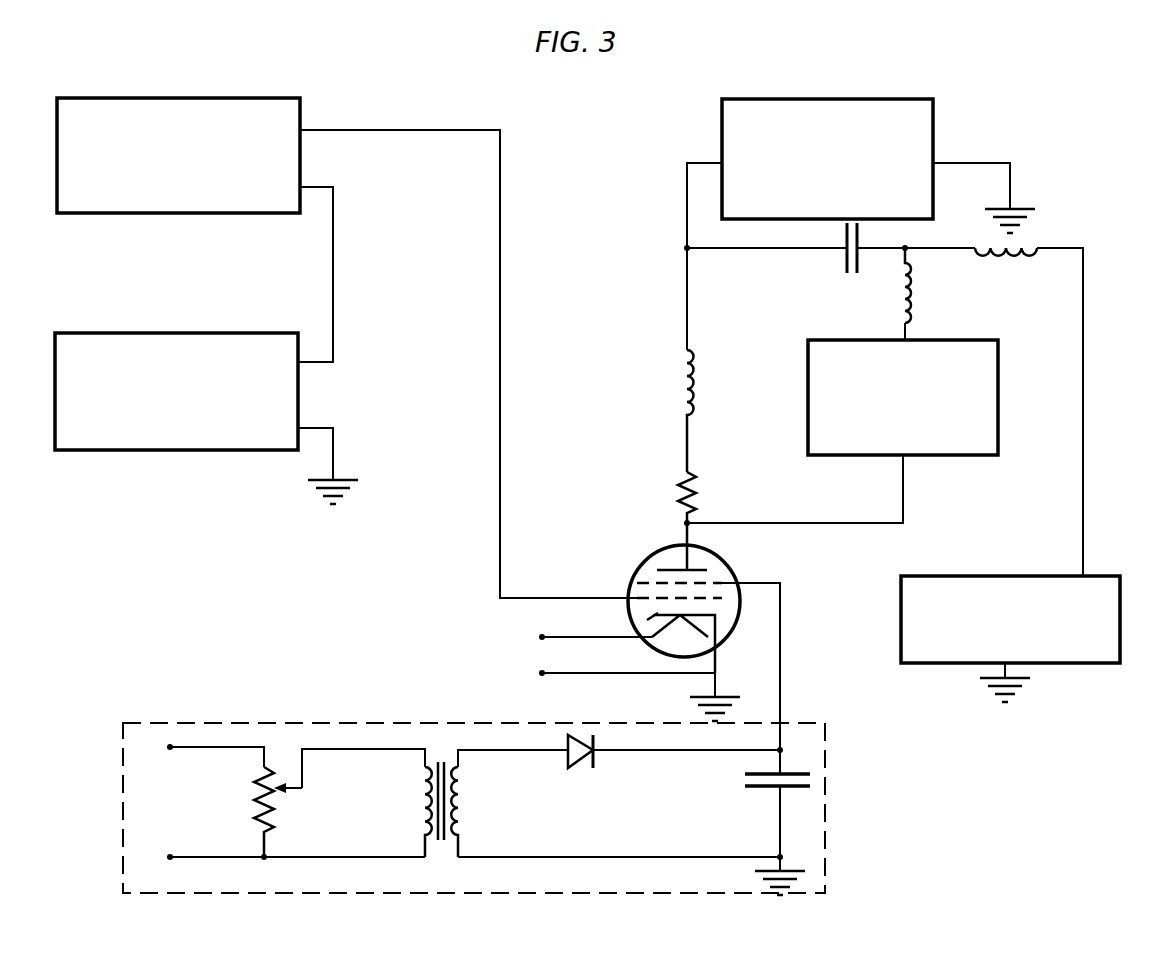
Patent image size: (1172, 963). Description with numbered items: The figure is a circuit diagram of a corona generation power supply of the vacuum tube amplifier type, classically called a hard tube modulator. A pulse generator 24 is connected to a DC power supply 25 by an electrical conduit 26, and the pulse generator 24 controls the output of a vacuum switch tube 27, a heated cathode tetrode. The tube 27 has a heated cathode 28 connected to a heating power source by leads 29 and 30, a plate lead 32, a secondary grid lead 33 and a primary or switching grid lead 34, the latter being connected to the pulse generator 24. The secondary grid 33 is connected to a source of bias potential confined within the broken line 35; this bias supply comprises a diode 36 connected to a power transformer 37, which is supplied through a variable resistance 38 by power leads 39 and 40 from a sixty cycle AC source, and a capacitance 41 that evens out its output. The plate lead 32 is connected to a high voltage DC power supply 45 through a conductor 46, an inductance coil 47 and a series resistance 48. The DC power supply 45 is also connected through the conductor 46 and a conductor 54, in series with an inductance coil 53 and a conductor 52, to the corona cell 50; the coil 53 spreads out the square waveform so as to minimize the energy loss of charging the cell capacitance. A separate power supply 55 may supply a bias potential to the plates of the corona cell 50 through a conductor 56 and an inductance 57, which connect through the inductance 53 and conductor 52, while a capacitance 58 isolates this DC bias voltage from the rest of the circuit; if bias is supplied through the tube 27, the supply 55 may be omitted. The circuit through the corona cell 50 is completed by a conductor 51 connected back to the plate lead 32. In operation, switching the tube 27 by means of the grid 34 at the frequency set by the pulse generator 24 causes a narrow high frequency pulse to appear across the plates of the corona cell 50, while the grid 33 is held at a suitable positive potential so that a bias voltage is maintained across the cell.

The pulse generator 24 is at (178, 97).
The DC power supply 25 is at (150, 450).
The electrical conduit 26 is at (333, 248).
The vacuum switch tube 27 is at (730, 569).
The heated cathode 28 is at (718, 660).
The lead 29 is at (598, 673).
The lead 30 is at (600, 637).
The plate lead 32 is at (683, 537).
The secondary grid lead 33 is at (780, 628).
The primary grid lead 34 is at (565, 598).
The bias potential supply 35 is at (825, 745).
The diode 36 is at (575, 770).
The power transformer 37 is at (464, 831).
The variable resistance 38 is at (270, 826).
The power lead 39 is at (190, 747).
The power lead 40 is at (200, 857).
The capacitance 41 is at (752, 786).
The DC power supply 45 is at (857, 99).
The conductor 46 is at (687, 203).
The inductance coil 47 is at (685, 378).
The resistance 48 is at (678, 487).
The corona cell 50 is at (998, 380).
The conductor 51 is at (903, 500).
The conductor 52 is at (905, 330).
The inductance coil 53 is at (916, 292).
The conductor 54 is at (797, 248).
The power supply 55 is at (1095, 663).
The conductor 56 is at (1083, 420).
The inductance 57 is at (1025, 242).
The capacitance 58 is at (858, 265).